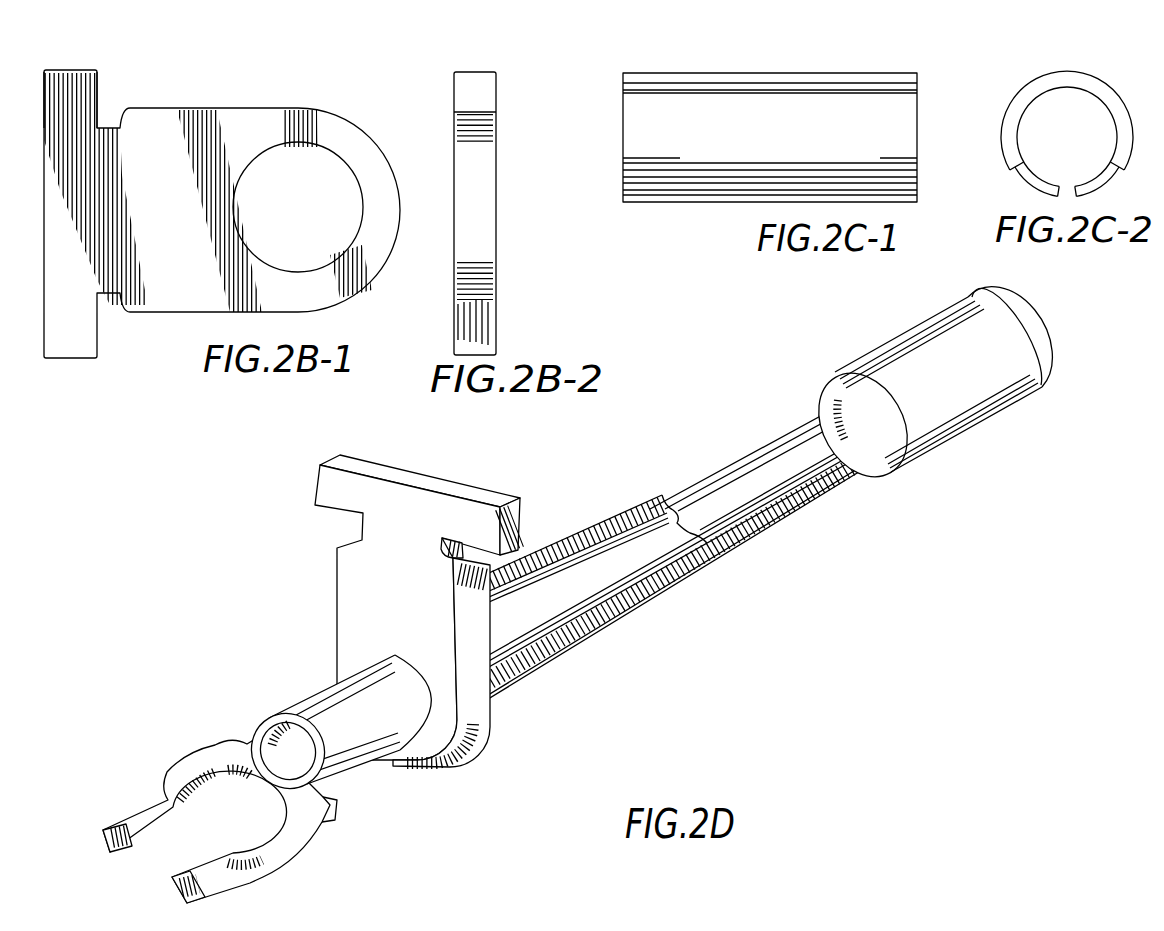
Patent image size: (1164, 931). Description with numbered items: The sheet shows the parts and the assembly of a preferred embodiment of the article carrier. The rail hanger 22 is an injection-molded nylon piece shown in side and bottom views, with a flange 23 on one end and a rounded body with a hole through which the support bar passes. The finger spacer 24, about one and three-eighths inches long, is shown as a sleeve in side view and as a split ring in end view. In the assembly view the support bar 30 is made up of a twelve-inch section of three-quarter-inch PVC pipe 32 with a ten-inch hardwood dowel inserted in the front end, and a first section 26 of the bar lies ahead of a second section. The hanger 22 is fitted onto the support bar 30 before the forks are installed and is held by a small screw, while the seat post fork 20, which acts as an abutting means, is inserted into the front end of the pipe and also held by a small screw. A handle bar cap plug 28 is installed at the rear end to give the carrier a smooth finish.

In FIG. 2D, the seat post fork 20 is at (340, 818).
In FIG. 2B-1, the hanger 22 is at (321, 101).
In FIG. 2B-2, the hanger 22 is at (475, 213).
In FIG. 2D, the hanger 22 is at (427, 517).
In FIG. 2B-1, the flange of mounting block 23 is at (83, 70).
In FIG. 2C-1, the tubular sleeve 24 is at (912, 65).
In FIG. 2C-2, the tubular sleeve 24 is at (1067, 133).
In FIG. 2D, the tubular sleeve 24 is at (957, 437).
In FIG. 2D, the first rod section 26 is at (645, 567).
In FIG. 2D, the handle bar cap plug 28 is at (1045, 374).
In FIG. 2D, the support bar 30 is at (680, 546).
In FIG. 2D, the PVC pipe 32 is at (787, 497).